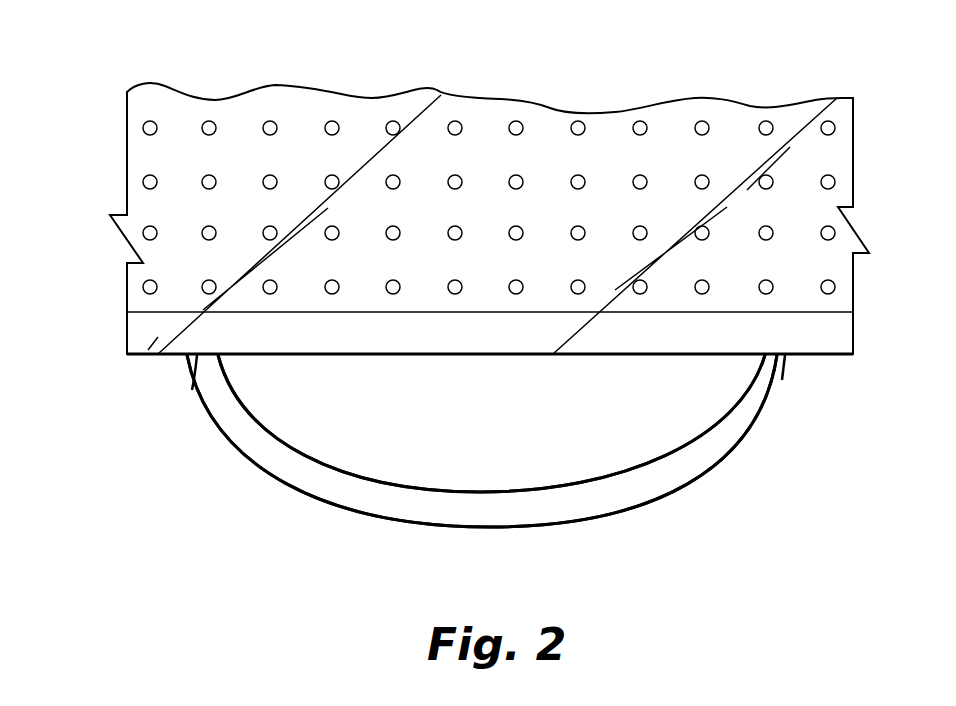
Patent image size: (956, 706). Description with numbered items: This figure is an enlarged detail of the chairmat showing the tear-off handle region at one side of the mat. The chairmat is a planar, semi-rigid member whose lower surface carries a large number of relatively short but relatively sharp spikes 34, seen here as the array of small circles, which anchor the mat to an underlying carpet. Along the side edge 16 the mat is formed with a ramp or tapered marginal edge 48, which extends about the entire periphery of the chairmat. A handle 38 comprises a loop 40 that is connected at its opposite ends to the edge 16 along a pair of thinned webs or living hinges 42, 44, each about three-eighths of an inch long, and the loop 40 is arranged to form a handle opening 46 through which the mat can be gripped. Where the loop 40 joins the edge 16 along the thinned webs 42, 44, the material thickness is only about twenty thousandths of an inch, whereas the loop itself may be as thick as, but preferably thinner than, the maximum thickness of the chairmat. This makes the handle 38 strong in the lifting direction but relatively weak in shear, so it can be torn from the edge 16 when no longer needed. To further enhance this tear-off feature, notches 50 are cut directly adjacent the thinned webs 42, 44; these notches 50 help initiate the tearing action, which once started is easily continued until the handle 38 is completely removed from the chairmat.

The side edge 16 is at (167, 356).
The spikes 34 is at (392, 118).
The handle 38 is at (250, 512).
The loop 40 is at (622, 507).
The thinned web 42 is at (192, 390).
The thinned web 44 is at (782, 380).
The handle opening 46 is at (397, 458).
The tapered marginal edge 48 is at (140, 356).
The notches 50 is at (223, 356).